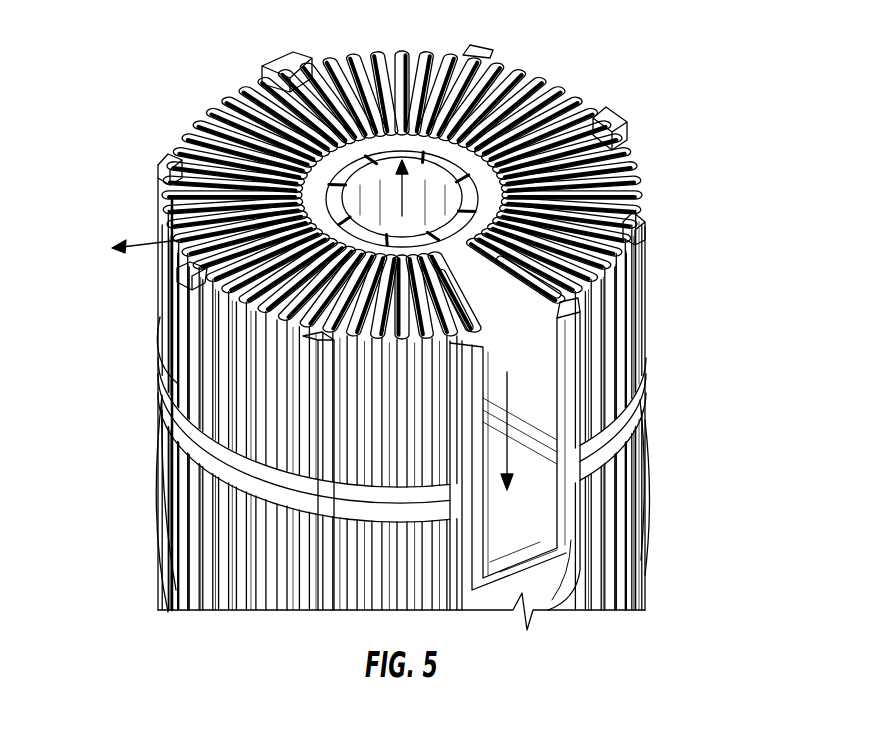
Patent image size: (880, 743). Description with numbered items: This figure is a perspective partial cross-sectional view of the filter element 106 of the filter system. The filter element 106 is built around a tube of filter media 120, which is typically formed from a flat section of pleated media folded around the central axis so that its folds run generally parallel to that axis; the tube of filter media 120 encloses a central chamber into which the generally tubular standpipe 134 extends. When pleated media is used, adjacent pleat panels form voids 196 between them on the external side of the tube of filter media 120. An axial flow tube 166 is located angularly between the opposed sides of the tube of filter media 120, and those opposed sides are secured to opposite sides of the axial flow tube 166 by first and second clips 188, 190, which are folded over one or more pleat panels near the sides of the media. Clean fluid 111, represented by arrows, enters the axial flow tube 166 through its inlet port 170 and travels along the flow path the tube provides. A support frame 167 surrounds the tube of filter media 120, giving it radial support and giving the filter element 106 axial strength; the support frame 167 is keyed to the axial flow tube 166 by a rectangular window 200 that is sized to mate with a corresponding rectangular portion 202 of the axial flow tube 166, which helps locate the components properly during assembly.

The filter element 106 is at (593, 54).
The clean fluid 111 is at (402, 200).
The tube of filter media 120 is at (214, 128).
The standpipe 134 is at (425, 58).
The axial flow tube 166 is at (546, 382).
The support frame 167 is at (162, 362).
The inlet port 170 is at (545, 428).
The first clip 188 is at (445, 342).
The second clip 190 is at (565, 288).
The voids 196 is at (256, 320).
The rectangular window 200 is at (582, 503).
The rectangular portion 202 is at (567, 532).